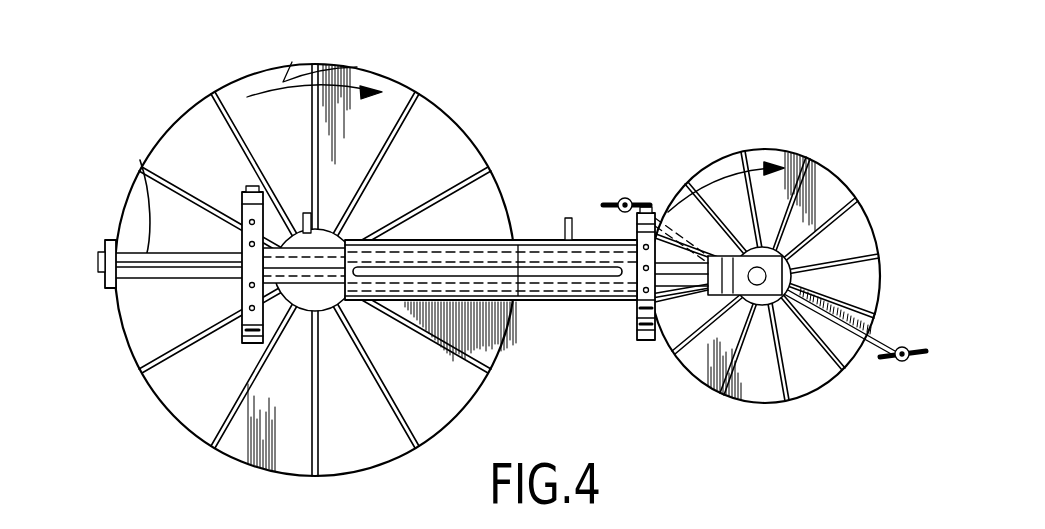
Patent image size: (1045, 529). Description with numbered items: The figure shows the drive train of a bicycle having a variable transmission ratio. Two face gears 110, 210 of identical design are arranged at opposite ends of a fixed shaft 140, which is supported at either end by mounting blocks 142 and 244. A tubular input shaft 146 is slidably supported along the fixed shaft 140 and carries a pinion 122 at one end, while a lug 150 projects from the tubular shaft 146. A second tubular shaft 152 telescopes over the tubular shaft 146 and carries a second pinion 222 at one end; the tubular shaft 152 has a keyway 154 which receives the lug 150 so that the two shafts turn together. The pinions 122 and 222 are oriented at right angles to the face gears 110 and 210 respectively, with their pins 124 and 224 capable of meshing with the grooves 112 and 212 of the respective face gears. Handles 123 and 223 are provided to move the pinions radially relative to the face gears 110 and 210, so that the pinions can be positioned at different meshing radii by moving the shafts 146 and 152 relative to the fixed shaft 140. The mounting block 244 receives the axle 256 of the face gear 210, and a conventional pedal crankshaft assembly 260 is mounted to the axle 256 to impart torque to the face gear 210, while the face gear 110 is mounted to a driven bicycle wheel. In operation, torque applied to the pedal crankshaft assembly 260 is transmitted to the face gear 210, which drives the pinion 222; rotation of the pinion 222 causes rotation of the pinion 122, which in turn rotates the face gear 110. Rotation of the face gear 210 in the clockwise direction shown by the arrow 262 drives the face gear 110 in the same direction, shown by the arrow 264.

The face gear 110 is at (430, 100).
The grooves 112 is at (146, 377).
The pinion 122 is at (200, 103).
The handle 123 is at (306, 215).
The pins 124 is at (248, 342).
The fixed shaft 140 is at (146, 172).
The mounting block 142 is at (110, 240).
The tubular input shaft 146 is at (327, 297).
The lug 150 is at (512, 268).
The tubular shaft 152 is at (576, 300).
The keyway 154 is at (488, 272).
The face gear 210 is at (835, 168).
The grooves 212 is at (881, 262).
The pinion 222 is at (632, 227).
The handle 223 is at (568, 218).
The pins 224 is at (643, 340).
The mounting block 244 is at (783, 160).
The axle 256 is at (762, 300).
The pedal crankshaft assembly 260 is at (880, 352).
The clockwise rotation direction 262 is at (700, 178).
The rotation direction 264 is at (288, 63).